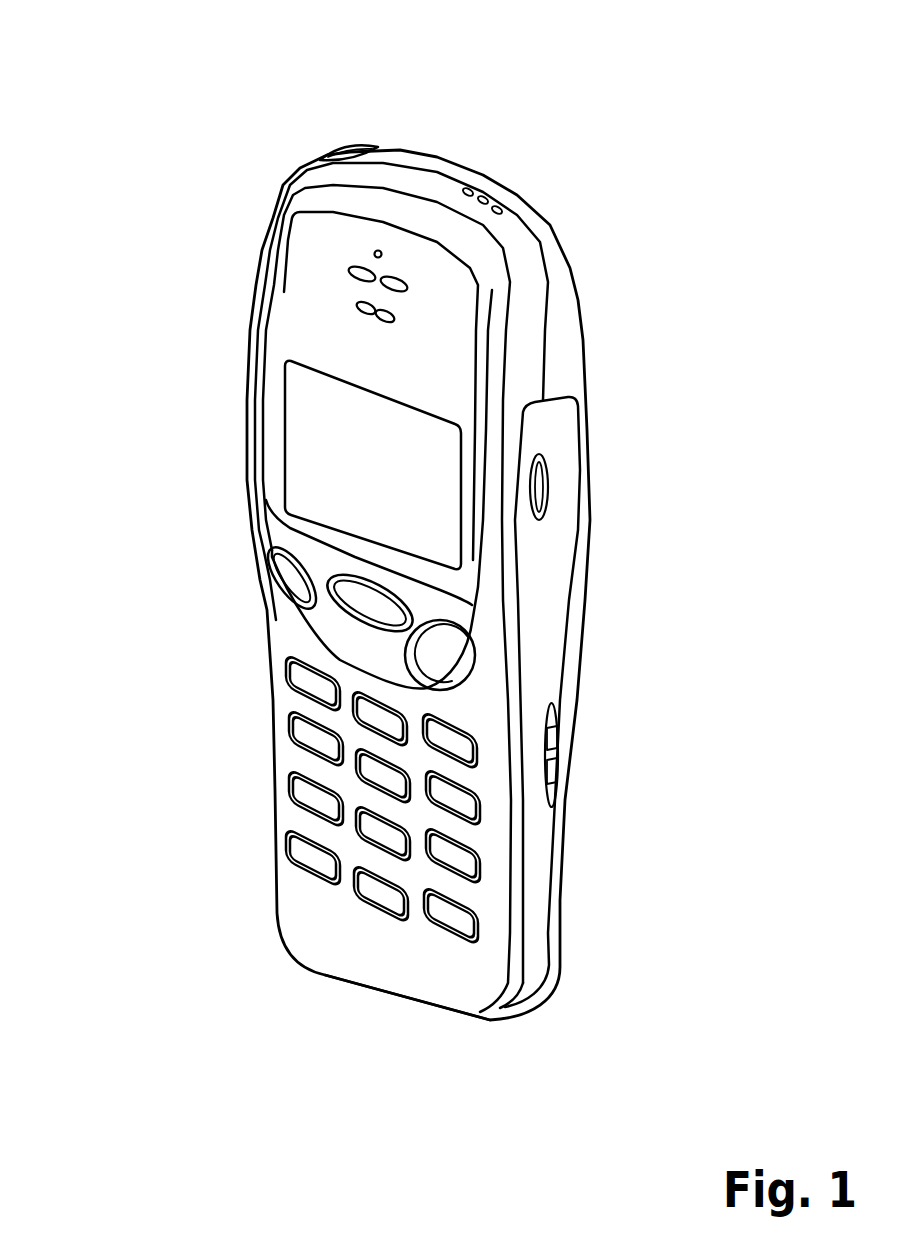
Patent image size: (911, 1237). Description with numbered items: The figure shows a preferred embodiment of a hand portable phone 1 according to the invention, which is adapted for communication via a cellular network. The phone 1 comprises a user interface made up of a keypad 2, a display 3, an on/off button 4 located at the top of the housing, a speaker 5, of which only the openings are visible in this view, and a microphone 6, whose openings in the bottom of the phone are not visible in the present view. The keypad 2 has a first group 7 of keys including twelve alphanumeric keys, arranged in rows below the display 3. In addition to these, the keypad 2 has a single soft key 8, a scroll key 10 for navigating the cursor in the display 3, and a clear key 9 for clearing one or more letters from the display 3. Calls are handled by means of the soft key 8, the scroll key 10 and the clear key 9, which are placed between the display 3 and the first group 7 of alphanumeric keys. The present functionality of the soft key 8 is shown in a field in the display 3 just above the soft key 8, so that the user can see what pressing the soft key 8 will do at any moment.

The phone 1 is at (432, 593).
The keypad 2 is at (250, 788).
The display 3 is at (345, 457).
The on/off button 4 is at (343, 147).
The speaker 5 is at (380, 256).
The microphone 6 is at (338, 987).
The first group of keys 7 is at (498, 787).
The soft key 8 is at (291, 540).
The clear key 9 is at (290, 594).
The scroll key 10 is at (457, 633).